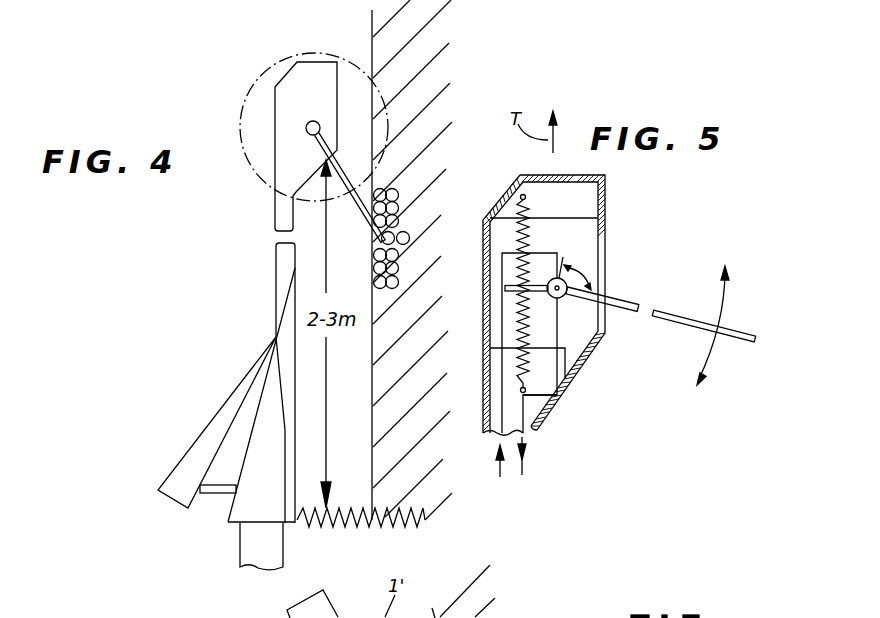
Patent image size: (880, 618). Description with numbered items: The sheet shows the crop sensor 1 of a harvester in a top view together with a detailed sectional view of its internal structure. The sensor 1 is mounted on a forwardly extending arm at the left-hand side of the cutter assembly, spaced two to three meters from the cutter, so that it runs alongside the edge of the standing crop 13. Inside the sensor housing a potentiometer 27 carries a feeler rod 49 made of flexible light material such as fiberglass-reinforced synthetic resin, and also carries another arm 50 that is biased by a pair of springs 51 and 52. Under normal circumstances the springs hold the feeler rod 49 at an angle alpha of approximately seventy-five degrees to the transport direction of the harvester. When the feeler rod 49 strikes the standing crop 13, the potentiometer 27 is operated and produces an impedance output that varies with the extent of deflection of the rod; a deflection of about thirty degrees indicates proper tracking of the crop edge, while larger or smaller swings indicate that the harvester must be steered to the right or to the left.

In FIG. 4, the crop sensor 1 is at (280, 55).
In FIG. 5, the crop sensor 1 is at (612, 221).
In FIG. 4, the standing crop 13 is at (403, 238).
In FIG. 5, the potentiometer 27 is at (563, 298).
In FIG. 5, the feeler rod 49 is at (667, 315).
In FIG. 5, the arm 50 is at (510, 292).
In FIG. 5, the spring 51 is at (526, 220).
In FIG. 5, the spring 52 is at (538, 363).